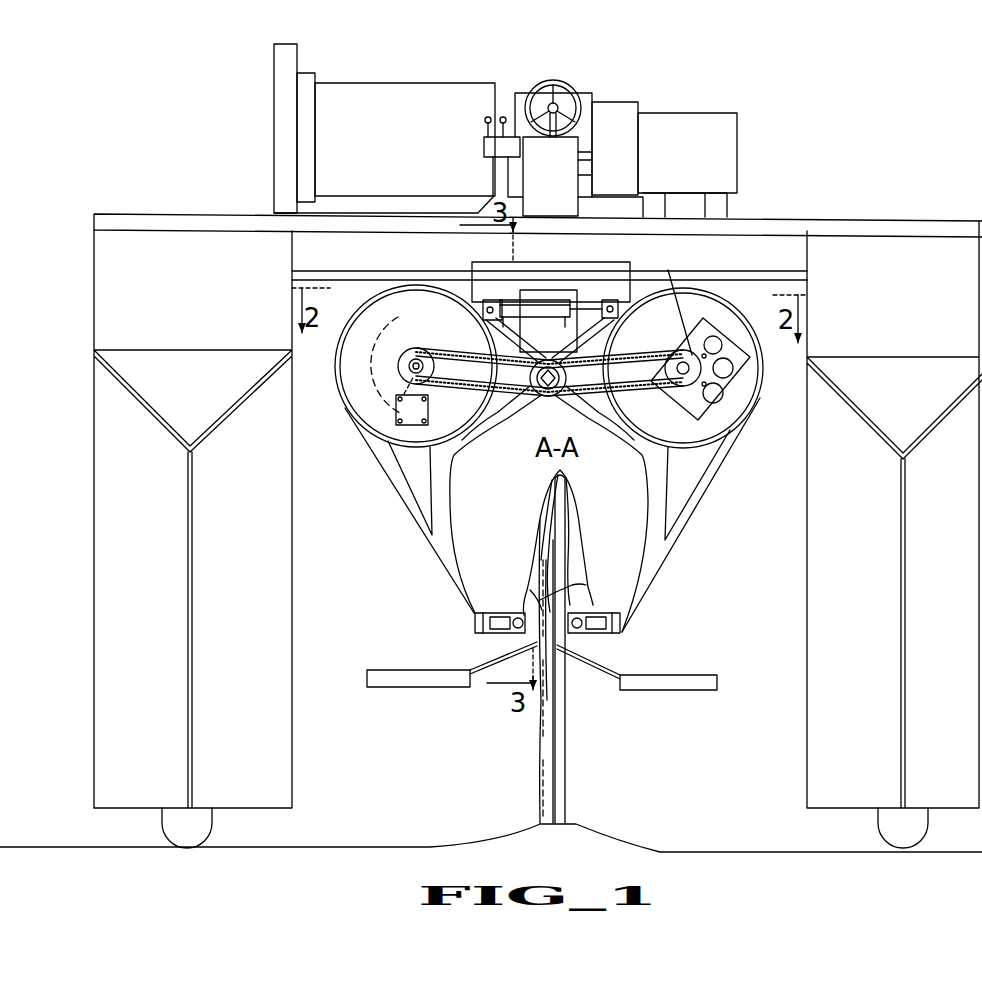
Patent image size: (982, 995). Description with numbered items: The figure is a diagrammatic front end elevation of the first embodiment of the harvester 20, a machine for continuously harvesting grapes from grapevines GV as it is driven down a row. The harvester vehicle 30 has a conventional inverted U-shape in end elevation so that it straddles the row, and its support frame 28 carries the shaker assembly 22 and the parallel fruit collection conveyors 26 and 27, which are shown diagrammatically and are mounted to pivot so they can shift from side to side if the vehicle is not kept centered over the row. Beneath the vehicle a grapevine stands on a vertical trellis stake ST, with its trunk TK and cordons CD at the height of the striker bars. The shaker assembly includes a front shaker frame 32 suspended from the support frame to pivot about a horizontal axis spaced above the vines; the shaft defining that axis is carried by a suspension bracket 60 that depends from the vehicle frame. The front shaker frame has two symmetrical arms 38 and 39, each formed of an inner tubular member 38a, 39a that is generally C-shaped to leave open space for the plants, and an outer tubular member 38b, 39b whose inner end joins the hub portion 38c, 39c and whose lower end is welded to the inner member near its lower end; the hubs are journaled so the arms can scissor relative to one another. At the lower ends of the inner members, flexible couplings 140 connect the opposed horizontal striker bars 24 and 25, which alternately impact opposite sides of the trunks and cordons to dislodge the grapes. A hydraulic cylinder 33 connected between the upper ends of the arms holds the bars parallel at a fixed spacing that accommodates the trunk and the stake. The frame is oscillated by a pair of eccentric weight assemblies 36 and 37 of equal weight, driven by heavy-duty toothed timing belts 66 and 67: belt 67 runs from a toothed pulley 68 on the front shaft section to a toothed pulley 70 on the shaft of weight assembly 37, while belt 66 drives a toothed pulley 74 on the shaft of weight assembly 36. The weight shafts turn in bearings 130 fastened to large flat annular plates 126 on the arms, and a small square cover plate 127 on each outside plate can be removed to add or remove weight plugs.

The harvester 20 is at (888, 162).
The shaker assembly 22 is at (683, 588).
The striker bar 24 is at (528, 612).
The striker bar 25 is at (574, 603).
The conveyor 26 is at (367, 688).
The conveyor 27 is at (680, 692).
The support frame 28 is at (748, 246).
The harvester vehicle 30 is at (893, 218).
The front shaker frame 32 is at (686, 553).
The hydraulic cylinder 33 is at (580, 297).
The eccentric weight assembly 36 is at (360, 380).
The eccentric weight assembly 37 is at (736, 378).
The arm 38 is at (405, 523).
The inner tubular member 38a is at (450, 458).
The outer tubular member 38b is at (385, 476).
The hub portion 38c is at (536, 396).
The arm 39 is at (690, 525).
The inner tubular member 39a is at (640, 450).
The outer tubular member 39b is at (710, 498).
The hub portion 39c is at (588, 402).
The suspension bracket 60 is at (536, 295).
The timing belt 66 is at (452, 360).
The timing belt 67 is at (654, 354).
The toothed pulley 68 is at (548, 371).
The toothed pulley 70 is at (694, 348).
The toothed pulley 74 is at (404, 367).
The annular plate 126 is at (358, 406).
The cover plate 127 is at (423, 410).
The bearing 130 is at (417, 352).
The flexible coupling 140 is at (470, 636).
The cordon CD is at (543, 577).
The trunk TK is at (540, 735).
The grapevine GV is at (537, 762).
The stake ST is at (565, 753).